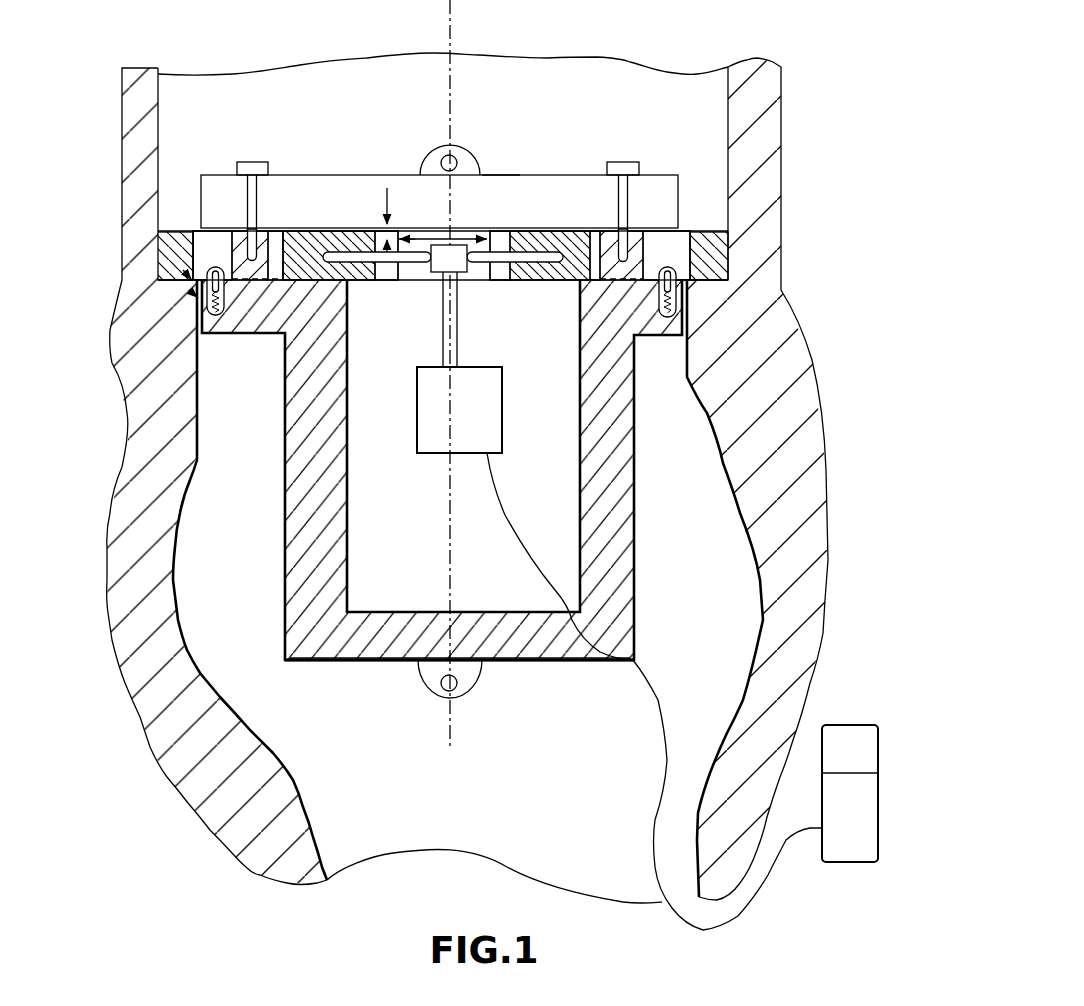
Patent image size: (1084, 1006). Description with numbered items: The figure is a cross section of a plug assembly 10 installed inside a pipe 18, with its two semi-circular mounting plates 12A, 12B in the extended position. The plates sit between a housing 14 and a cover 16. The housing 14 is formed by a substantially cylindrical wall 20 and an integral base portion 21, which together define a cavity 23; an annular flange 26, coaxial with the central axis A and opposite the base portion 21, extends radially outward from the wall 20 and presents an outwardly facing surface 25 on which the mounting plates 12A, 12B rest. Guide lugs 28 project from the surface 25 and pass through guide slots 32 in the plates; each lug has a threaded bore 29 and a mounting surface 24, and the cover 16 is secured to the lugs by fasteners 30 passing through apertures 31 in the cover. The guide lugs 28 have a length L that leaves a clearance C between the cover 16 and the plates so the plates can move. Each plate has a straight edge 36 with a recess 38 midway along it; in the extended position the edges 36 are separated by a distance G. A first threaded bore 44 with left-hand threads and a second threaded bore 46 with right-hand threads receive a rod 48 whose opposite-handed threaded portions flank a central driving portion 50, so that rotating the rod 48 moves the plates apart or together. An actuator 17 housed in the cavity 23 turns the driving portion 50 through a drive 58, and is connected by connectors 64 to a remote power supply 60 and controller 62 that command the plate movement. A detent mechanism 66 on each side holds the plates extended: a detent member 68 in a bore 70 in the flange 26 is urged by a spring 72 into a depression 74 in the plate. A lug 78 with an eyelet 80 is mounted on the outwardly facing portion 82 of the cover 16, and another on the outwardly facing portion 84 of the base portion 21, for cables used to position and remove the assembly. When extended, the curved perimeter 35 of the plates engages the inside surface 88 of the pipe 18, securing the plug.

The plug assembly 10 is at (478, 93).
The mounting plate 12A is at (303, 232).
The mounting plate 12B is at (537, 230).
The housing 14 is at (282, 469).
The cover 16 is at (678, 178).
The actuator 17 is at (503, 400).
The pipe 18 is at (757, 66).
The cylindrical wall 20 is at (633, 516).
The base portion 21 is at (560, 650).
The cavity 23 is at (351, 586).
The mounting surface 24 is at (246, 242).
The outwardly facing surface 25 is at (290, 245).
The annular flange 26 is at (730, 281).
The guide lug 28 is at (248, 246).
The threaded bore 29 is at (268, 228).
The fastener 30 is at (248, 166).
The aperture 31 is at (250, 197).
The guide slot 32 is at (189, 280).
The curved perimeter 35 is at (168, 252).
The edge 36 is at (398, 273).
The recess 38 is at (374, 283).
The first threaded bore 44 is at (338, 240).
The second threaded bore 46 is at (533, 240).
The rod 48 is at (419, 276).
The central driving portion 50 is at (438, 273).
The drive 58 is at (458, 335).
The power supply 60 is at (850, 850).
The controller 62 is at (852, 725).
The connector 64 is at (653, 832).
The detent mechanism 66 is at (198, 297).
The detent member 68 is at (208, 300).
The bore 70 is at (222, 302).
The spring 72 is at (215, 318).
The depression 74 is at (198, 262).
The lug 78 is at (440, 158).
The eyelet 80 is at (457, 156).
The outwardly facing portion of the cover 82 is at (498, 175).
The outwardly facing portion of the base 84 is at (364, 661).
The inside surface 88 is at (163, 272).
The central axis A is at (453, 740).
The clearance C is at (386, 215).
The distance G is at (452, 239).
The length L is at (598, 292).